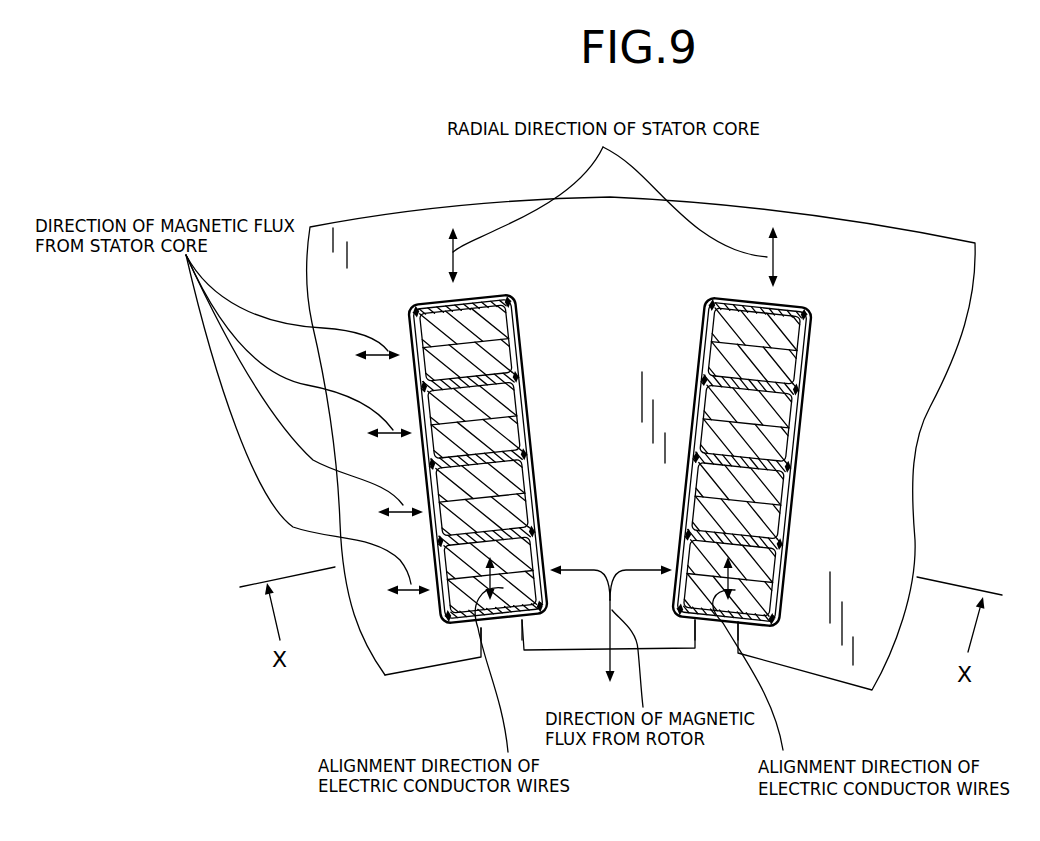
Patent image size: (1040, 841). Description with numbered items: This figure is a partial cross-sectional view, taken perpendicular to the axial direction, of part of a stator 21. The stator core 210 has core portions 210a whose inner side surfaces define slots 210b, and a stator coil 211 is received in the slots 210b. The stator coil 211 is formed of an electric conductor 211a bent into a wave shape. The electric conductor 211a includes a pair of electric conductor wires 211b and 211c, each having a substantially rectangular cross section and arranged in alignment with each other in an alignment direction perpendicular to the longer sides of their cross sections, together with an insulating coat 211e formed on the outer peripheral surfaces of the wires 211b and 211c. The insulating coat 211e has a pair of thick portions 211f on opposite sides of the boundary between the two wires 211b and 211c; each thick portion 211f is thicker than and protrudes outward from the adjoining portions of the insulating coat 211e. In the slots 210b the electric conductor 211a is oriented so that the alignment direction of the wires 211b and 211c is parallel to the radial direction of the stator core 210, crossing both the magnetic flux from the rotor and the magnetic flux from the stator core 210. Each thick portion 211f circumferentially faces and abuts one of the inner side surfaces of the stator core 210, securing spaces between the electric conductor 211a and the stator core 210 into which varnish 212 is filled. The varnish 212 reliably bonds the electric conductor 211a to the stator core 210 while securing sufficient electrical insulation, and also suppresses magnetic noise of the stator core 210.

The stator 21 is at (814, 86).
The stator core 210 is at (903, 437).
The tooth 210a is at (430, 672).
The slots 210b is at (528, 532).
The stator coil 211 is at (565, 257).
The electric conductor 211a is at (692, 425).
The electric conductor wire 211b is at (515, 327).
The electric conductor wire 211c is at (428, 300).
The insulating coat 211e is at (515, 370).
The thick portions 211f is at (405, 330).
The varnish 212 is at (523, 450).